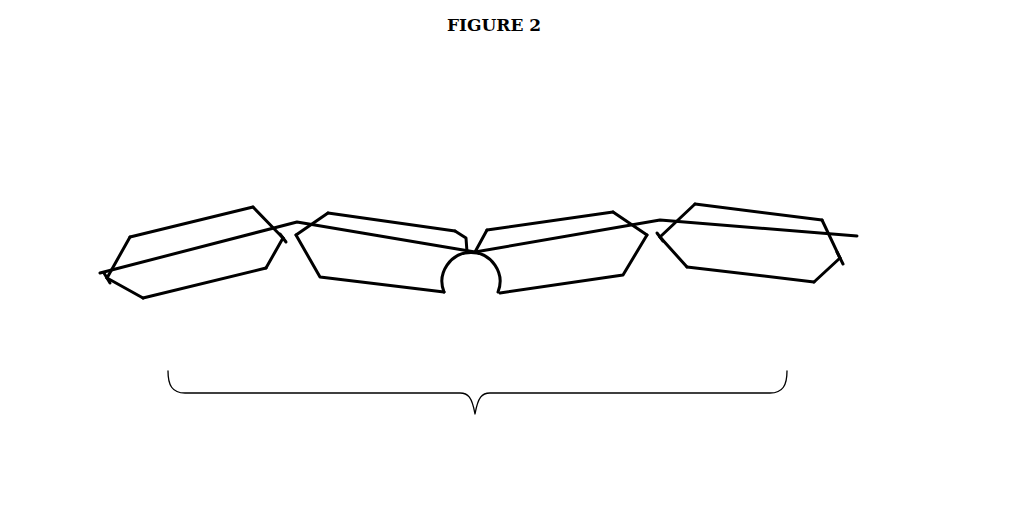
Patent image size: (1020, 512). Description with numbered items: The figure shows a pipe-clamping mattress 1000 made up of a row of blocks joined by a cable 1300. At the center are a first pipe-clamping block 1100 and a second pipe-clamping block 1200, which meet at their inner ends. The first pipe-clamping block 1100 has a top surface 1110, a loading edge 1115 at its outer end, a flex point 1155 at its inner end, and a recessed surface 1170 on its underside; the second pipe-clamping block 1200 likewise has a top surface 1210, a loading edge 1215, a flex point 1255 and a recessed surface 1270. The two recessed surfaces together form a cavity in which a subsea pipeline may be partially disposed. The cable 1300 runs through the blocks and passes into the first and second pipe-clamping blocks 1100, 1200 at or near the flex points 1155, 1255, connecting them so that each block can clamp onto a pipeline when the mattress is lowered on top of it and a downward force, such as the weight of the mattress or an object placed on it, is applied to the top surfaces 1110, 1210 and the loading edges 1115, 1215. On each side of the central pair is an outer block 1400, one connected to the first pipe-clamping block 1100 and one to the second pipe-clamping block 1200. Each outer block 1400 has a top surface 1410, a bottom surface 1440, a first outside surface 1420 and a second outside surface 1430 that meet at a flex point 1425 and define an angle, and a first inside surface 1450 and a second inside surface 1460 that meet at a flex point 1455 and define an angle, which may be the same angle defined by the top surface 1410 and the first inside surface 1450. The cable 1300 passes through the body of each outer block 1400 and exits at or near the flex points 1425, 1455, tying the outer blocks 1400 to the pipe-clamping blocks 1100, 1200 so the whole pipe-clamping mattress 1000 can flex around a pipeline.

The pipe-clamping mattress 1000 is at (477, 411).
The first pipe-clamping block 1100 is at (410, 245).
The top surface 1110 is at (363, 212).
The loading edge 1115 is at (326, 208).
The flex point 1155 is at (465, 233).
The recessed surface 1170 is at (495, 280).
The second pipe-clamping block 1200 is at (541, 246).
The top surface 1210 is at (577, 210).
The loading edge 1215 is at (615, 203).
The flex point 1255 is at (483, 232).
The recessed surface 1270 is at (453, 275).
The cable 1300 is at (657, 227).
The outer block 1400 is at (476, 230).
The top surface 1410 is at (175, 214).
The first outside surface 1420 is at (118, 247).
The flex point 1425 is at (100, 280).
The second outside surface 1430 is at (122, 292).
The bottom surface 1440 is at (183, 293).
The first inside surface 1450 is at (265, 205).
The flex point 1455 is at (283, 225).
The second inside surface 1460 is at (277, 263).